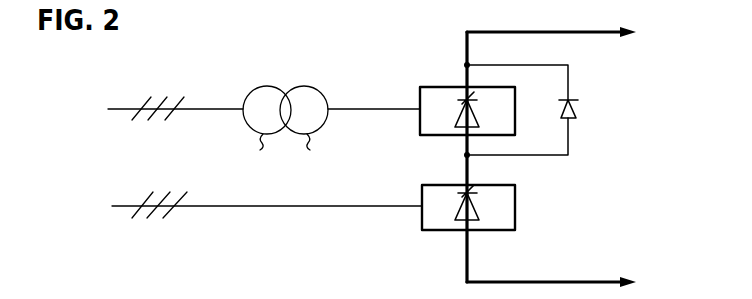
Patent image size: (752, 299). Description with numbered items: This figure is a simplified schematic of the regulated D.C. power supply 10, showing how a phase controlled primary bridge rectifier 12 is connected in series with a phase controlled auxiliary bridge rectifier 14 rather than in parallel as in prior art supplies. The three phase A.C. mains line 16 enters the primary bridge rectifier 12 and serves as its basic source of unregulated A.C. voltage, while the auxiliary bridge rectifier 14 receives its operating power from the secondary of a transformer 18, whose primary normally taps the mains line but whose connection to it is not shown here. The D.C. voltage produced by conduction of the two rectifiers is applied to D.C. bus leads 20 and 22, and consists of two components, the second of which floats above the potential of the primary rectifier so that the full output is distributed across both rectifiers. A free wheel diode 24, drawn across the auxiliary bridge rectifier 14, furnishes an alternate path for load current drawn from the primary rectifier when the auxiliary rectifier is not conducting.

The regulated D.C. power supply 10 is at (238, 24).
The phase controlled primary bridge rectifier 12 is at (426, 185).
The phase controlled auxiliary bridge rectifier 14 is at (429, 87).
The three phase A.C. mains line 16 is at (353, 208).
The transformer 18 is at (283, 80).
The D.C. bus lead 20 is at (572, 30).
The D.C. bus lead 22 is at (577, 280).
The free wheel diode 24 is at (572, 116).